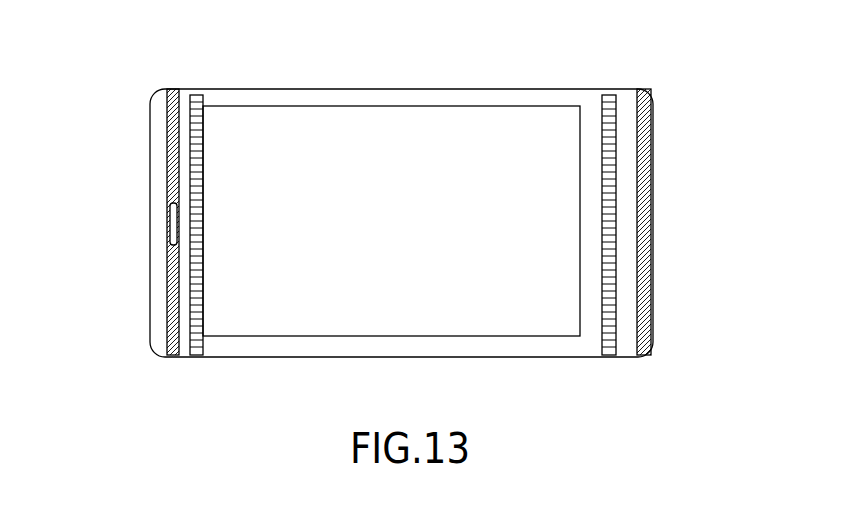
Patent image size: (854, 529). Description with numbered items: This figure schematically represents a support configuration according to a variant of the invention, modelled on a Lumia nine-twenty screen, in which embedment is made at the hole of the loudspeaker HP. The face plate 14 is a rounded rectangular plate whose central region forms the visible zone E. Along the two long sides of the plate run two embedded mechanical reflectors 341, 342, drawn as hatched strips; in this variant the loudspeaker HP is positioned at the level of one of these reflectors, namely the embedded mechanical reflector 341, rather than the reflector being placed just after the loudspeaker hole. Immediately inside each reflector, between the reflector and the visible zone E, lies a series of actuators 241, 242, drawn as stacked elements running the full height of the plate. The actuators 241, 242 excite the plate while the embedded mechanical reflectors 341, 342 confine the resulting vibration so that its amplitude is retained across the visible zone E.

The housing 14 is at (583, 98).
The visible zone E is at (450, 136).
The embedded mechanical reflector 341 is at (168, 128).
The embedded mechanical reflector 342 is at (648, 208).
The loudspeaker HP is at (170, 223).
The actuator 241 is at (198, 356).
The actuator 242 is at (610, 356).